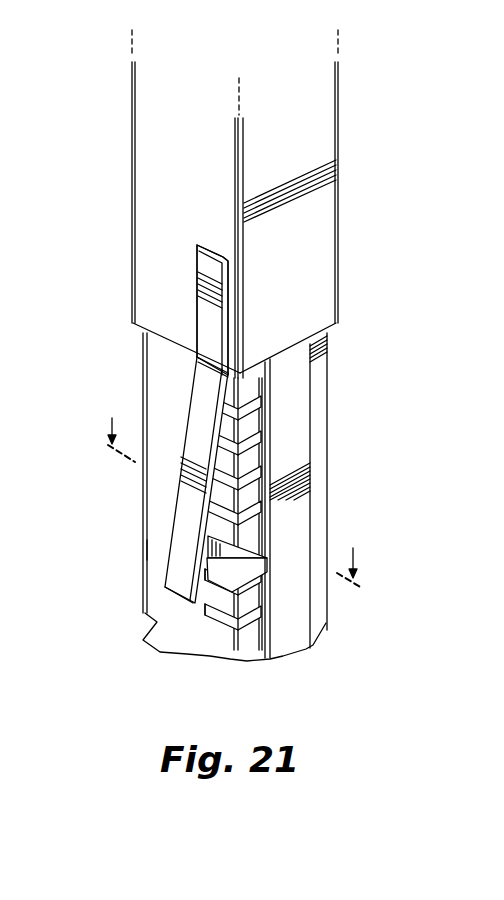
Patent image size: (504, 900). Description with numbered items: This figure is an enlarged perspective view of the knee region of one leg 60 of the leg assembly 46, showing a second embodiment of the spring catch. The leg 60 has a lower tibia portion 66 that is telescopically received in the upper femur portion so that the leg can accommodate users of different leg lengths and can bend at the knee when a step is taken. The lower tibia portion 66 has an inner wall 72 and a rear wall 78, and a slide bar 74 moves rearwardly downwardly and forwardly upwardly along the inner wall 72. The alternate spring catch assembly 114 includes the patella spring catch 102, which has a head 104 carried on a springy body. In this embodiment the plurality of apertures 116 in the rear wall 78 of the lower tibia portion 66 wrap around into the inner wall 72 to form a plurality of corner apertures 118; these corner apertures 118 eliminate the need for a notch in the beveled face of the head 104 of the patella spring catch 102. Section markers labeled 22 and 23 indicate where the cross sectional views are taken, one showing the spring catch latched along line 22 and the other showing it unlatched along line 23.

The leg 60 is at (146, 162).
The leg assembly 46 is at (343, 141).
The lower tibia portion 66 is at (157, 400).
The slide bar 74 is at (290, 382).
The inner wall 72 is at (315, 452).
The spring catch assembly 114 is at (148, 550).
The rear wall 78 is at (148, 603).
The patella spring catch 102 is at (176, 583).
The head 104 is at (210, 575).
The apertures 116 is at (302, 545).
The corner apertures 118 is at (243, 620).
The line 22- 22 is at (80, 454).
The line 23- 23 is at (384, 588).